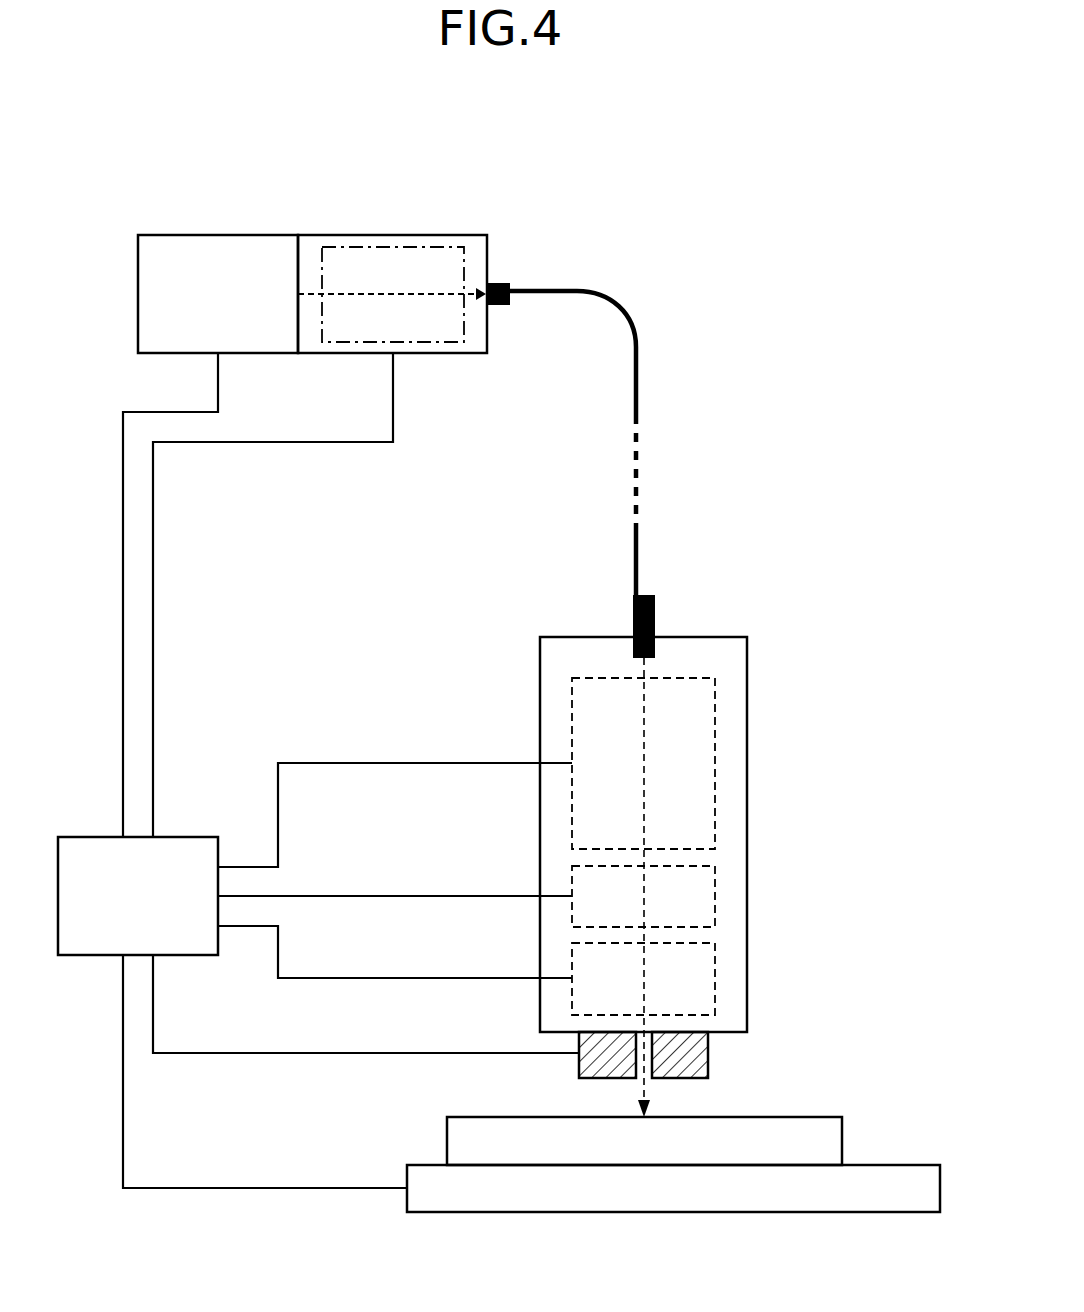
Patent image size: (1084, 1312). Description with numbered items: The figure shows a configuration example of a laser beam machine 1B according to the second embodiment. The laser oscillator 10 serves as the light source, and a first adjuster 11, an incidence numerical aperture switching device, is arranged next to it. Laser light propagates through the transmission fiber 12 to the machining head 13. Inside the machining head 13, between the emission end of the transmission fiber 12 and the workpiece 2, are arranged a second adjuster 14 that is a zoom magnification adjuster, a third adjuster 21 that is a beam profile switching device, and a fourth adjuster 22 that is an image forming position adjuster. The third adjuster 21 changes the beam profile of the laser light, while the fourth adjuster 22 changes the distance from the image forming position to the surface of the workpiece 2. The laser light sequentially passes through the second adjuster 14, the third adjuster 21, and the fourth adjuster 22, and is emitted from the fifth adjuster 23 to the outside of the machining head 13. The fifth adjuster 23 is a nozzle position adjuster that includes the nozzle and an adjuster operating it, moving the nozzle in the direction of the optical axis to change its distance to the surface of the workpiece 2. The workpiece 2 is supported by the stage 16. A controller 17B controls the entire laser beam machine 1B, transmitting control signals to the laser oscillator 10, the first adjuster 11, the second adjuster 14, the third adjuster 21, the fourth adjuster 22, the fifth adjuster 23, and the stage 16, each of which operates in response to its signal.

The laser beam machine 1B is at (774, 174).
The laser oscillator 10 is at (219, 235).
The first adjuster 11 is at (393, 247).
The transmission fiber 12 is at (537, 290).
The machining head 13 is at (747, 650).
The second adjuster 14 is at (715, 763).
The third adjuster 21 is at (715, 896).
The fourth adjuster 22 is at (715, 978).
The fifth adjuster 23 is at (708, 1053).
The controller 17B is at (184, 837).
The workpiece 2 is at (767, 1117).
The stage 16 is at (905, 1165).